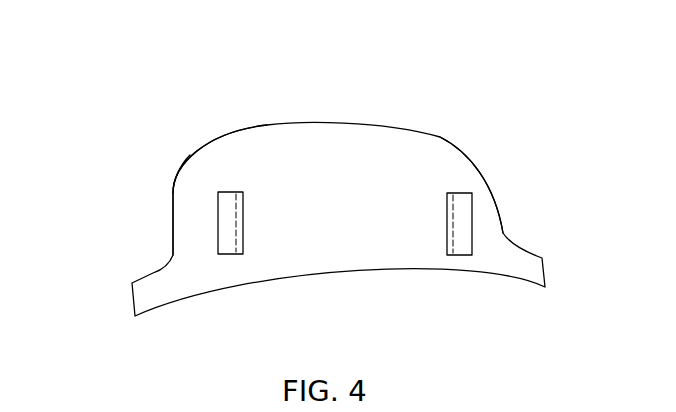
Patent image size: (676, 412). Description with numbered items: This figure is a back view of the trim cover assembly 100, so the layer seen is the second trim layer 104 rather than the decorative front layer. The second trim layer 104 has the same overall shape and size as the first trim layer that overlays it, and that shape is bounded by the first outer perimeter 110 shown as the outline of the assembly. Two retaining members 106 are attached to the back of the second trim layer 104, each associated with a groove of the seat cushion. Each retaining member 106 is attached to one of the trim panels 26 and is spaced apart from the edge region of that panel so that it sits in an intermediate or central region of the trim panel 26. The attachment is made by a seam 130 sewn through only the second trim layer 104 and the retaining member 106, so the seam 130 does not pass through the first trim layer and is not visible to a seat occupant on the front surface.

The trim panel 26 is at (338, 187).
The trim cover assembly 100 is at (272, 152).
The seam 130 is at (222, 177).
The first outer perimeter 110 is at (187, 158).
The second trim layer 104 is at (430, 168).
The retaining member 106 is at (222, 211).